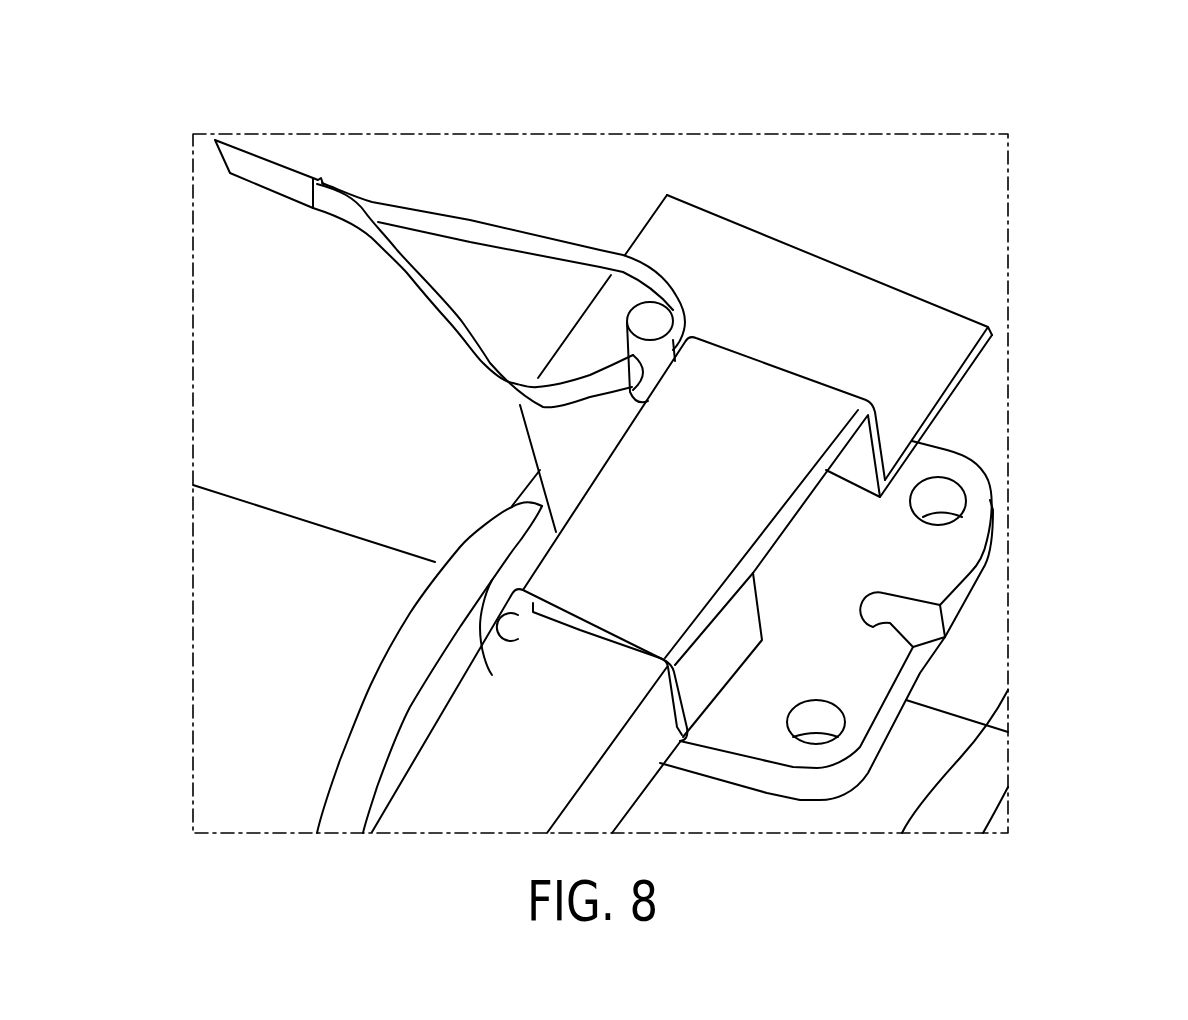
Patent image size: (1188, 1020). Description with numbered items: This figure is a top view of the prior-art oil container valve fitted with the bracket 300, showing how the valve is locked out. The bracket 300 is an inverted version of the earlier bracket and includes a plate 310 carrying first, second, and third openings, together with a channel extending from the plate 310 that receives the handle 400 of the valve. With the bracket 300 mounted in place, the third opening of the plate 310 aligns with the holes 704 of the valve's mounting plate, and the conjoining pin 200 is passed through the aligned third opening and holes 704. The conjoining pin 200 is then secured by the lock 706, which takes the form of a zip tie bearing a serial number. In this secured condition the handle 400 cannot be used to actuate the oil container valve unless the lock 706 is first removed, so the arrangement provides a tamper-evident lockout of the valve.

The lock 706 is at (466, 221).
The conjoining pin 200 is at (650, 320).
The bracket 300 is at (746, 443).
The plate 310 is at (873, 347).
The openings 704 is at (950, 493).
The handle 400 is at (497, 748).